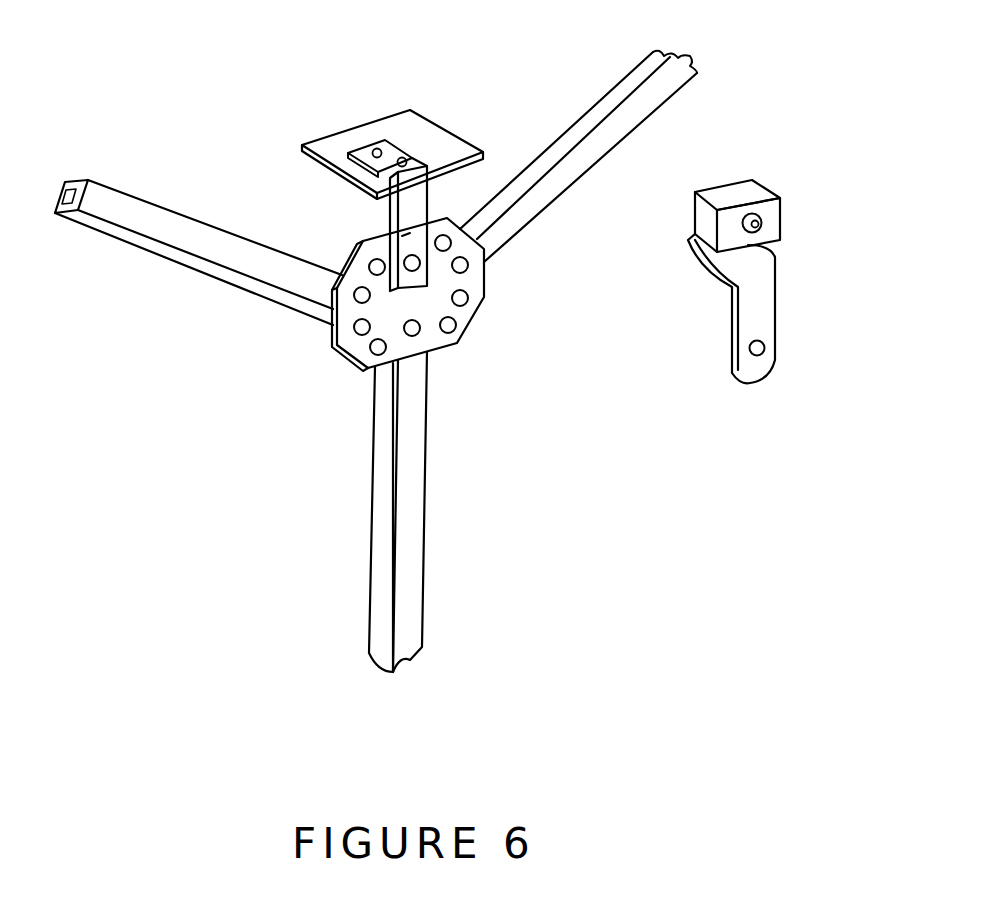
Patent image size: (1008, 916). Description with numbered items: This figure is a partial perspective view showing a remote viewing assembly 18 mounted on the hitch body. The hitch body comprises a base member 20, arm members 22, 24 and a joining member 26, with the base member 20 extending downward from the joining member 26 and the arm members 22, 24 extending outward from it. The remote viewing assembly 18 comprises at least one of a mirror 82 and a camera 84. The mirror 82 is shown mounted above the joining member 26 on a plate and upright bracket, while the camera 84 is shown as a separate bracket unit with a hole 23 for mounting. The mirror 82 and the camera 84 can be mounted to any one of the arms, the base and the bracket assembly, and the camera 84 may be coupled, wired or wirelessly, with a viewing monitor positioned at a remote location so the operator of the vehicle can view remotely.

The remote viewing assembly 18 is at (272, 102).
The base member 20 is at (415, 548).
The arm member 22 is at (183, 272).
The hole 23 is at (783, 210).
The arm member 24 is at (604, 92).
The joining member 26 is at (457, 345).
The mirror 82 is at (399, 108).
The camera 84 is at (793, 148).